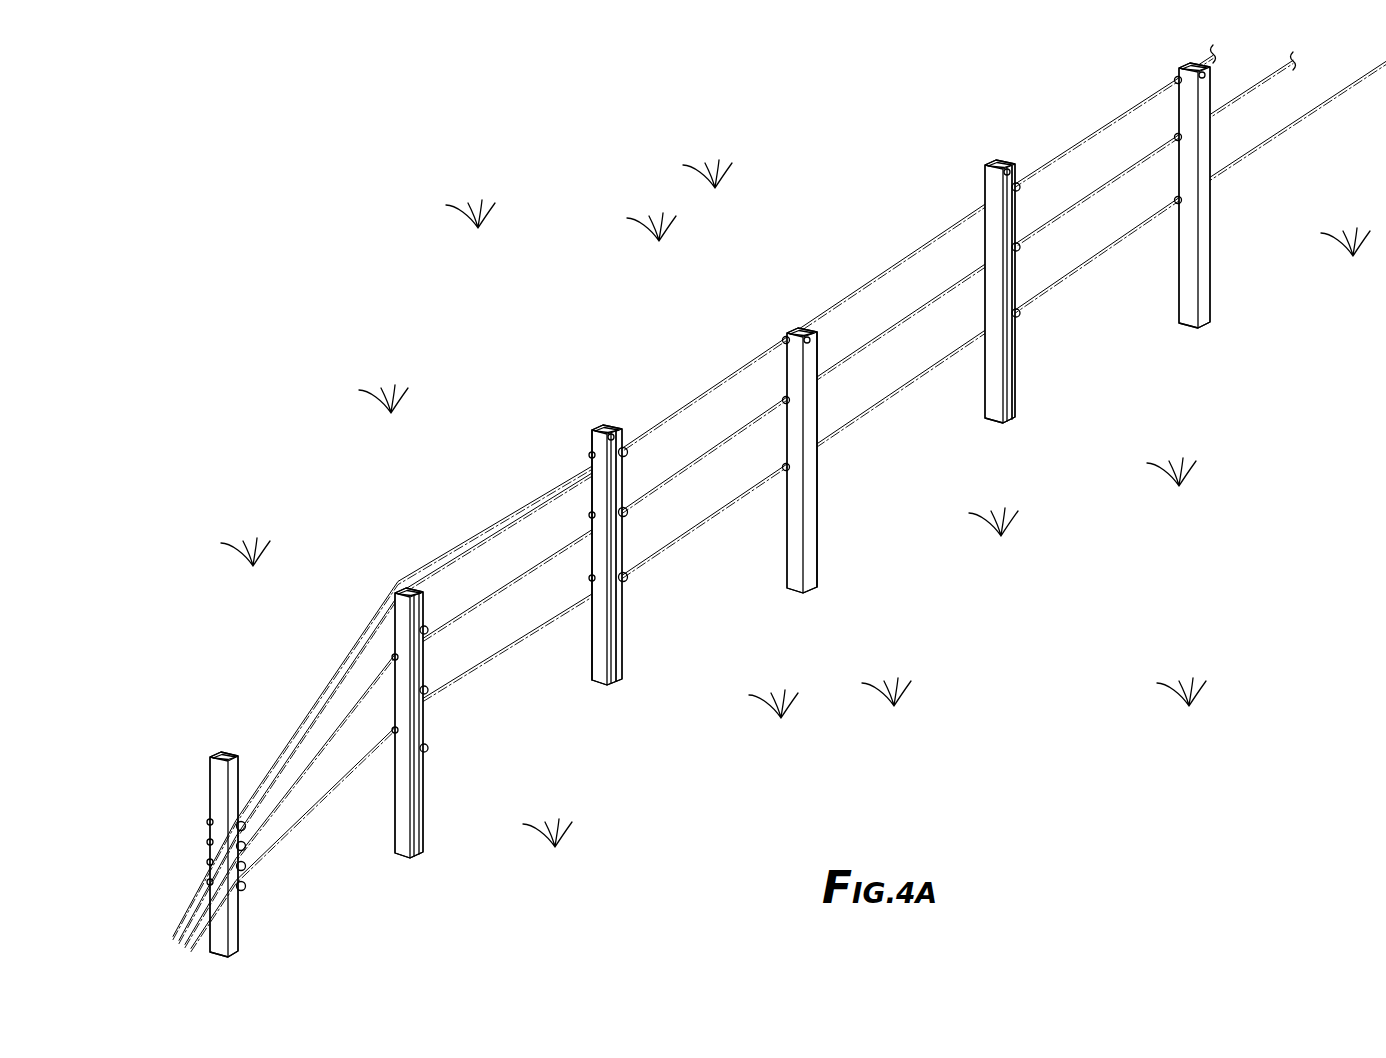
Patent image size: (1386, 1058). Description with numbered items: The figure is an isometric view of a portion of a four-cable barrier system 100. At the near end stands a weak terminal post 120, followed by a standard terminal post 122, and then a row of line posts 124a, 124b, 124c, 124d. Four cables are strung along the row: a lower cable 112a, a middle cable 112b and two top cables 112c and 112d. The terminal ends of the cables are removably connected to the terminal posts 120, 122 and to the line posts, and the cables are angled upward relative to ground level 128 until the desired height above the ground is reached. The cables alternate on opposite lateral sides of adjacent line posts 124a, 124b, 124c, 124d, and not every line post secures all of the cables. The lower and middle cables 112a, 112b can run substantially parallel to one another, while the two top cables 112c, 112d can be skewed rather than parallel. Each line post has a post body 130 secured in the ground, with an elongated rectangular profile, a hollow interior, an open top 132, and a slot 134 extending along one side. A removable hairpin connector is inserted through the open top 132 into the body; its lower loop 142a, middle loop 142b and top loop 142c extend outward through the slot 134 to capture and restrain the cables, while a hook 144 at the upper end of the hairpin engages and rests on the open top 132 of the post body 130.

The cable barrier system 100 is at (779, 501).
The lower cable 112a is at (308, 815).
The middle cable 112b is at (358, 708).
The top cable 112c is at (984, 195).
The top cable 112d is at (966, 213).
The weak terminal post 120 is at (240, 920).
The standard terminal post 122 is at (428, 797).
The line post 124a is at (610, 687).
The line post 124b is at (818, 577).
The line post 124c is at (1017, 400).
The line post 124d is at (1212, 277).
The ground level 128 is at (972, 690).
The post body 130 is at (816, 503).
The open top 132 is at (1004, 160).
The slot 134 is at (1017, 338).
The lower loop 142a is at (628, 577).
The middle loop 142b is at (628, 518).
The top loop 142c is at (628, 456).
The hook 144 is at (1000, 160).